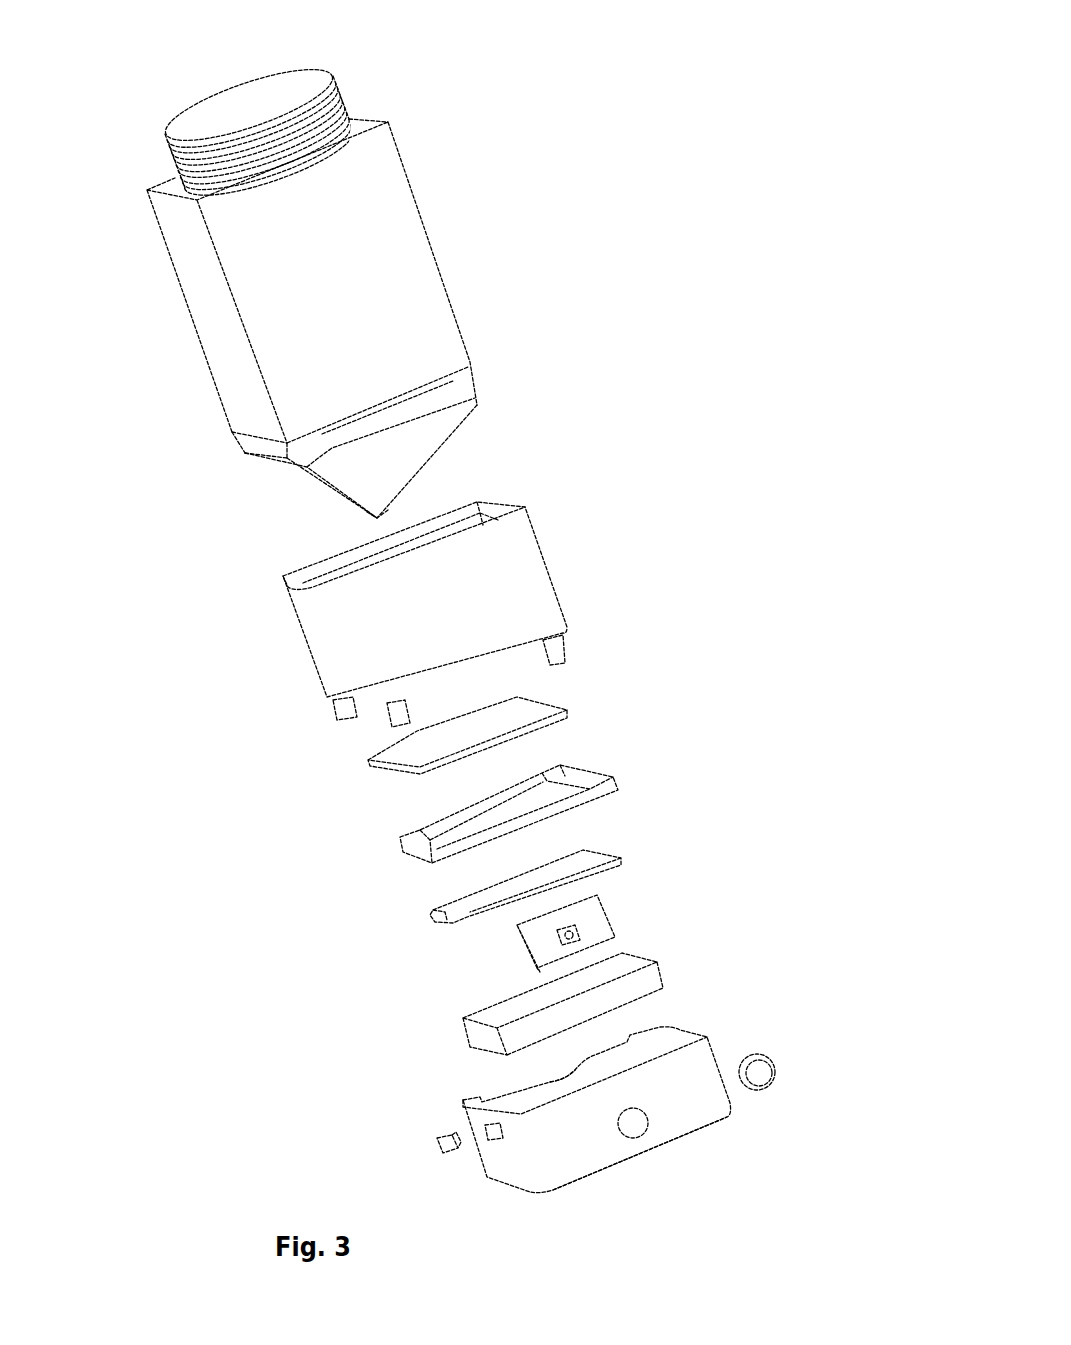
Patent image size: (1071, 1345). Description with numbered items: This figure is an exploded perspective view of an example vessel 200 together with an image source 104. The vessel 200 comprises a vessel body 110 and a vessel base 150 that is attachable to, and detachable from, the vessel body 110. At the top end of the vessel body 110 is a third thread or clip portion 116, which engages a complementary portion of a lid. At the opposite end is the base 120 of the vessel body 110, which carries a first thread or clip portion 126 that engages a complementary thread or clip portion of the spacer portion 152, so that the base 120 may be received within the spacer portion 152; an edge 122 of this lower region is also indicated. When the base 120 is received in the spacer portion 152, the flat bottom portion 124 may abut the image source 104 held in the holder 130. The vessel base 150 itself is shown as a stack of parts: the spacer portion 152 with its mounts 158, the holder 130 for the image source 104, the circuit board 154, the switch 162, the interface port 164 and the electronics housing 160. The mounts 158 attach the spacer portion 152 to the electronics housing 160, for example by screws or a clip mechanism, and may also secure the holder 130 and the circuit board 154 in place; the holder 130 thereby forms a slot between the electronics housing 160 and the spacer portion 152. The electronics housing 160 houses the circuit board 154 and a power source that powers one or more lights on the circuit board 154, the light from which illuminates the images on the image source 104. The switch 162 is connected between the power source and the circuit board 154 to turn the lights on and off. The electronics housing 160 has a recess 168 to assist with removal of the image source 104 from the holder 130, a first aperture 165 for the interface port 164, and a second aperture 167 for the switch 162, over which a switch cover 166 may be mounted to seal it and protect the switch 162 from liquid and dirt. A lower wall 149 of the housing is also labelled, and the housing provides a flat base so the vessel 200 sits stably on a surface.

The vessel 200 is at (375, 53).
The vessel body 110 is at (437, 238).
The third thread or clip portion 116 is at (158, 158).
The base 120 is at (490, 413).
The bottom edge 122 is at (302, 480).
The flat bottom portion 124 is at (407, 511).
The first thread or clip portion 126 is at (228, 452).
The vessel base 150 is at (213, 610).
The spacer portion 152 is at (545, 568).
The mounts 158 is at (563, 653).
The image source 104 is at (563, 700).
The holder 130 is at (620, 775).
The circuit board 154 is at (622, 847).
The switch 162 is at (602, 923).
The electronics housing 160 is at (708, 1037).
The recess 168 is at (550, 1078).
The interface port 164 is at (440, 1127).
The first aperture 165 is at (508, 1127).
The switch cover 166 is at (773, 1060).
The second aperture 167 is at (650, 1117).
The bottom wall 149 is at (635, 1172).